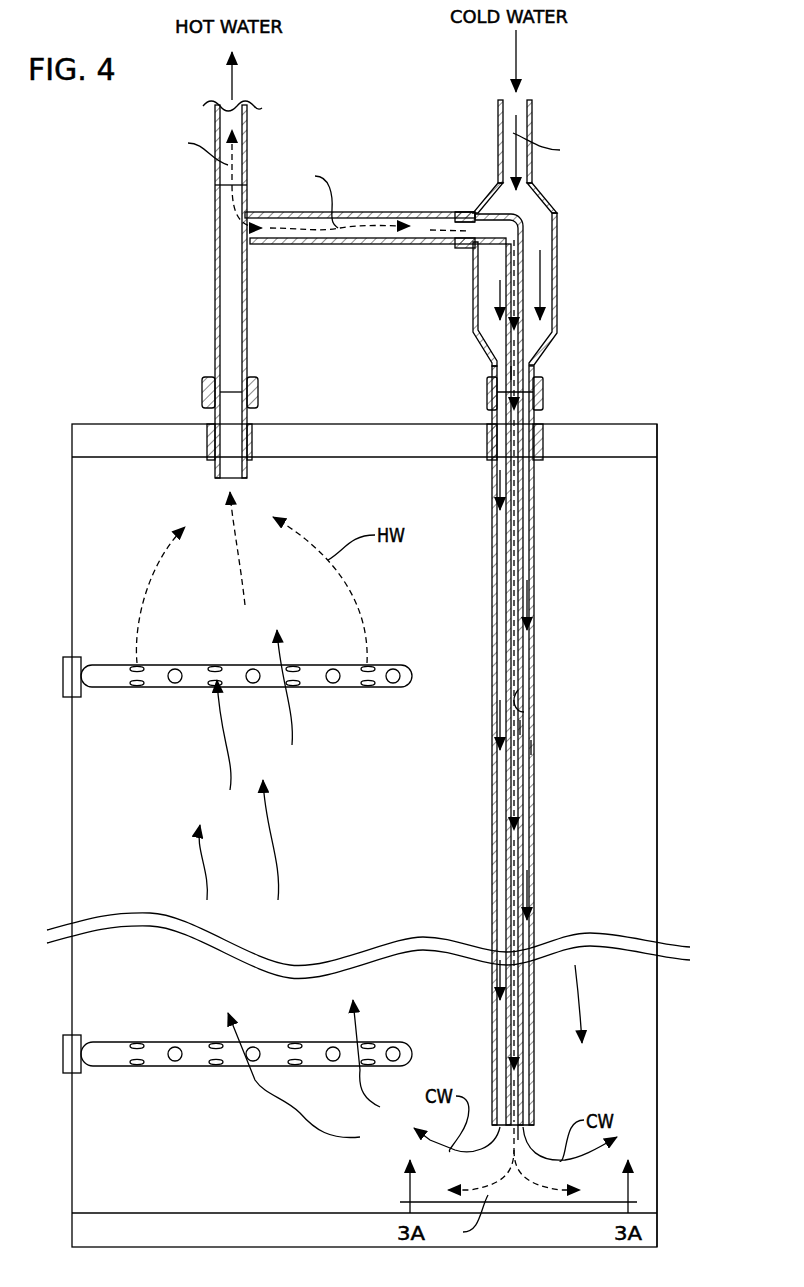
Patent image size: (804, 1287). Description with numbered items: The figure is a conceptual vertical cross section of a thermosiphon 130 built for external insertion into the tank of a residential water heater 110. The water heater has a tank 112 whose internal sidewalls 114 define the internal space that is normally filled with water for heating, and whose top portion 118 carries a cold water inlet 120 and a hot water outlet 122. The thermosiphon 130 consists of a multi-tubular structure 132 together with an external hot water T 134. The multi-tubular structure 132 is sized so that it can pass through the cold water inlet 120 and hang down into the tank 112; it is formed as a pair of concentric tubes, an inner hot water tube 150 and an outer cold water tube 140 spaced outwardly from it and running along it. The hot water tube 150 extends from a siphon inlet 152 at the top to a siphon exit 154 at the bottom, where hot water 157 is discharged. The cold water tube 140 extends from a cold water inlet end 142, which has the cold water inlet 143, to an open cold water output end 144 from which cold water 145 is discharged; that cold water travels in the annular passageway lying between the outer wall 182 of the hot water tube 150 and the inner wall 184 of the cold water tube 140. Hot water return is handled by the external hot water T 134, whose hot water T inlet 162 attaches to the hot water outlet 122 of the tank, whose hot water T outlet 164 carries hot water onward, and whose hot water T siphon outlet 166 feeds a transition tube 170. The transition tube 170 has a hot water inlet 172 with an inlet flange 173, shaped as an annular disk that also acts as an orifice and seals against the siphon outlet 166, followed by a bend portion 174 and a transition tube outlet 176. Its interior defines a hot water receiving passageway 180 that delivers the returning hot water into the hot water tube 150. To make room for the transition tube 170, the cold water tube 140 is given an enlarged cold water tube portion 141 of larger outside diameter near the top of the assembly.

The residential water heater 110 is at (406, 801).
The tank 112 is at (658, 642).
The internal sidewalls 114 is at (657, 812).
The top portion 118 is at (625, 457).
The cold water inlet 120 is at (546, 412).
The hot water outlet 122 is at (250, 415).
The thermosiphon 130 is at (375, 265).
The multi-tubular structure 132 is at (480, 352).
The external hot water T 134 is at (383, 244).
The cold water tube 140 is at (535, 520).
The enlarged cold water tube portion 141 is at (557, 270).
The cold water inlet end 142 is at (535, 100).
The cold water inlet 143 is at (510, 103).
The cold water output end 144 is at (533, 1147).
The cold water 145 is at (536, 1158).
The hot water tube 150 is at (548, 669).
The siphon inlet 152 is at (457, 213).
The siphon exit 154 is at (500, 1133).
The hot water 157 is at (532, 1195).
The hot water T inlet 162 is at (204, 289).
The hot water T outlet 164 is at (218, 200).
The hot water T siphon outlet 166 is at (460, 212).
The transition tube 170 is at (524, 342).
The hot water inlet 172 is at (460, 245).
The inlet flange 173 is at (450, 220).
The bend portion 174 is at (524, 250).
The transition tube outlet 176 is at (524, 374).
The hot water receiving passageway 180 is at (532, 746).
The outer wall 182 is at (526, 729).
The inner wall 184 is at (524, 712).